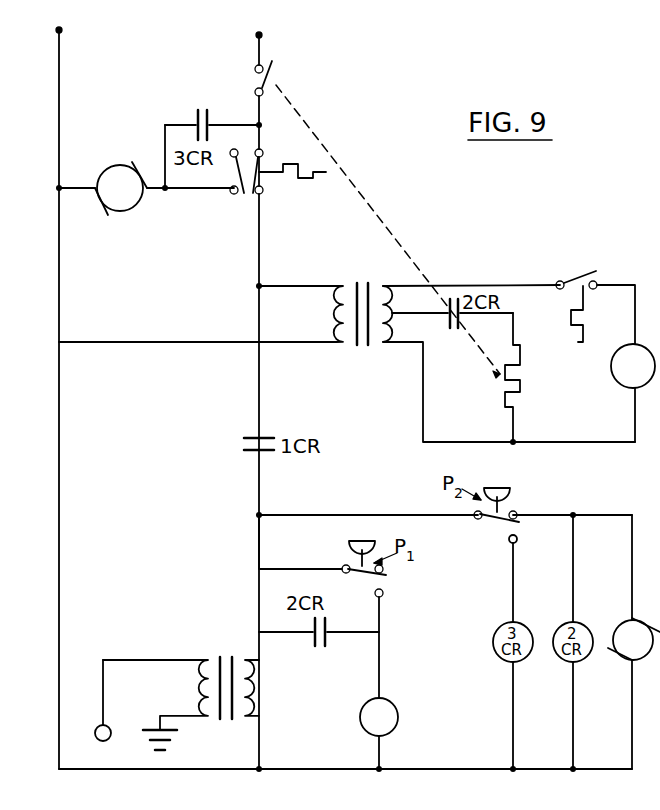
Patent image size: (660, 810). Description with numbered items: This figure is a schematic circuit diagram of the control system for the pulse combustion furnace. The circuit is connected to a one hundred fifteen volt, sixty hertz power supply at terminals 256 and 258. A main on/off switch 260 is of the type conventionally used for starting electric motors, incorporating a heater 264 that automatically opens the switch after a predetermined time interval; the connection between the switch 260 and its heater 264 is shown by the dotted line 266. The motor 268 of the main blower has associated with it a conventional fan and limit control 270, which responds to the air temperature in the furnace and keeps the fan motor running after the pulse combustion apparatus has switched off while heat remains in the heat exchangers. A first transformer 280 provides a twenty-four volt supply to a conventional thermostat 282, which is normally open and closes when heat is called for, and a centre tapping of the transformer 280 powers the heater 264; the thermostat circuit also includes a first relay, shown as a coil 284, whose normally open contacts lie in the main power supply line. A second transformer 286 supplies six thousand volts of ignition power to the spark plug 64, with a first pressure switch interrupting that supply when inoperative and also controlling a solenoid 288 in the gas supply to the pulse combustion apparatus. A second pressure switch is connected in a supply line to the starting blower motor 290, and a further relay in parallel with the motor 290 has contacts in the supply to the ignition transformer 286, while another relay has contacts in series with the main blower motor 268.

The power supply terminal 256 is at (64, 30).
The power supply terminal 258 is at (257, 35).
The main on/off switch 260 is at (257, 78).
The heater 264 is at (500, 379).
The dotted line connection 266 is at (314, 136).
The blower motor 268 is at (112, 180).
The fan and limit control 270 is at (270, 181).
The first transformer 280 is at (362, 349).
The thermostat 282 is at (575, 268).
The relay coil 1CR 284 is at (611, 375).
The second transformer 286 is at (226, 653).
The solenoid 288 is at (392, 719).
The starting blower motor 290 is at (628, 625).
The spark plug 64 is at (99, 741).